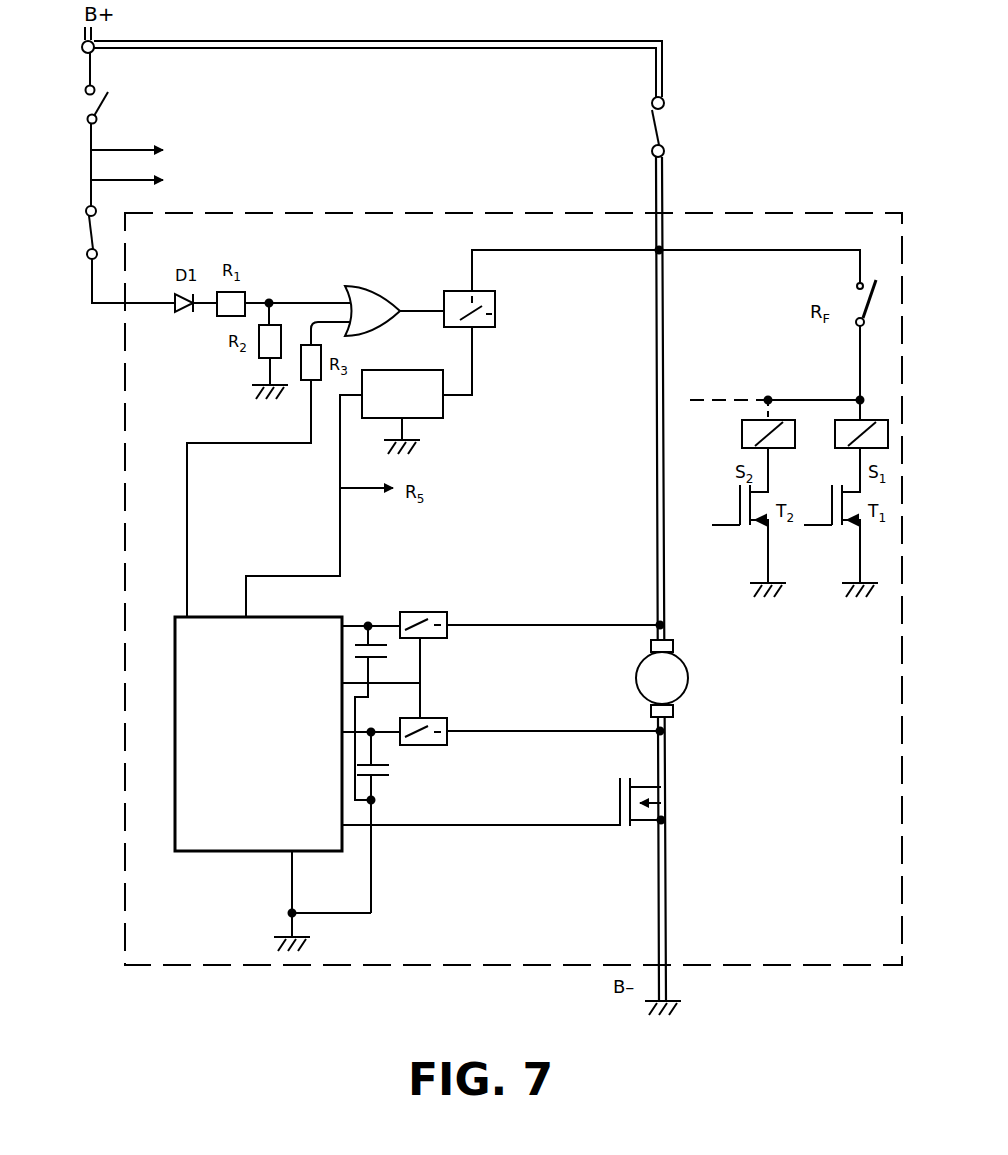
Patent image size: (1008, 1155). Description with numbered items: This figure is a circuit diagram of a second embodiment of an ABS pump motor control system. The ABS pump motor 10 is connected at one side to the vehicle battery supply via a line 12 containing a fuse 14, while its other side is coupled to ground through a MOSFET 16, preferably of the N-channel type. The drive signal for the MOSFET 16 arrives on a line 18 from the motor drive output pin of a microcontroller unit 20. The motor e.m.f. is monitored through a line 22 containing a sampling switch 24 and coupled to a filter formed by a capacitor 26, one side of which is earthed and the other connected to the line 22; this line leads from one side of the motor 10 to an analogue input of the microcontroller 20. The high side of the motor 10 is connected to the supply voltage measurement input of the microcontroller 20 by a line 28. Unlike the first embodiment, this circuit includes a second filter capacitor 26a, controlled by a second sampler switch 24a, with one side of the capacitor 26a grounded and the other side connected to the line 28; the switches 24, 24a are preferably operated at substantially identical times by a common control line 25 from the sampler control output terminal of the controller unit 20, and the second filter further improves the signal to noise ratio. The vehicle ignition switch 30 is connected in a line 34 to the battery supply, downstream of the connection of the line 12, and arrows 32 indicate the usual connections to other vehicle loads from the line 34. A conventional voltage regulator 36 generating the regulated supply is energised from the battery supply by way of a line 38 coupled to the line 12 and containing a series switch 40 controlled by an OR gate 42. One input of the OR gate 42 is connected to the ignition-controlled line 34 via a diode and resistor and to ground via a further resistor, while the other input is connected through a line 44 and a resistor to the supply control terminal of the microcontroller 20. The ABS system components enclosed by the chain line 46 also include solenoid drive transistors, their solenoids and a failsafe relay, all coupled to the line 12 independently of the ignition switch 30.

The ABS pump motor 10 is at (676, 684).
The line 12 is at (672, 342).
The fuse 14 is at (662, 126).
The MOSFET 16 is at (673, 803).
The line 18 is at (552, 826).
The microcontroller unit 20 is at (258, 734).
The line 22 is at (605, 733).
The sampling switch 24 is at (451, 717).
The second sampler switch 24a is at (468, 600).
The common control line 25 is at (393, 673).
The capacitor 26 is at (376, 777).
The second filter capacitor 26a is at (358, 622).
The line 28 is at (489, 628).
The vehicle ignition switch 30 is at (85, 100).
The arrows 32 is at (145, 165).
The line 34 is at (91, 135).
The voltage regulator 36 is at (432, 402).
The line 38 is at (475, 363).
The series switch 40 is at (497, 315).
The OR gate 42 is at (380, 301).
The line 44 is at (187, 553).
The chain line 46 is at (808, 967).